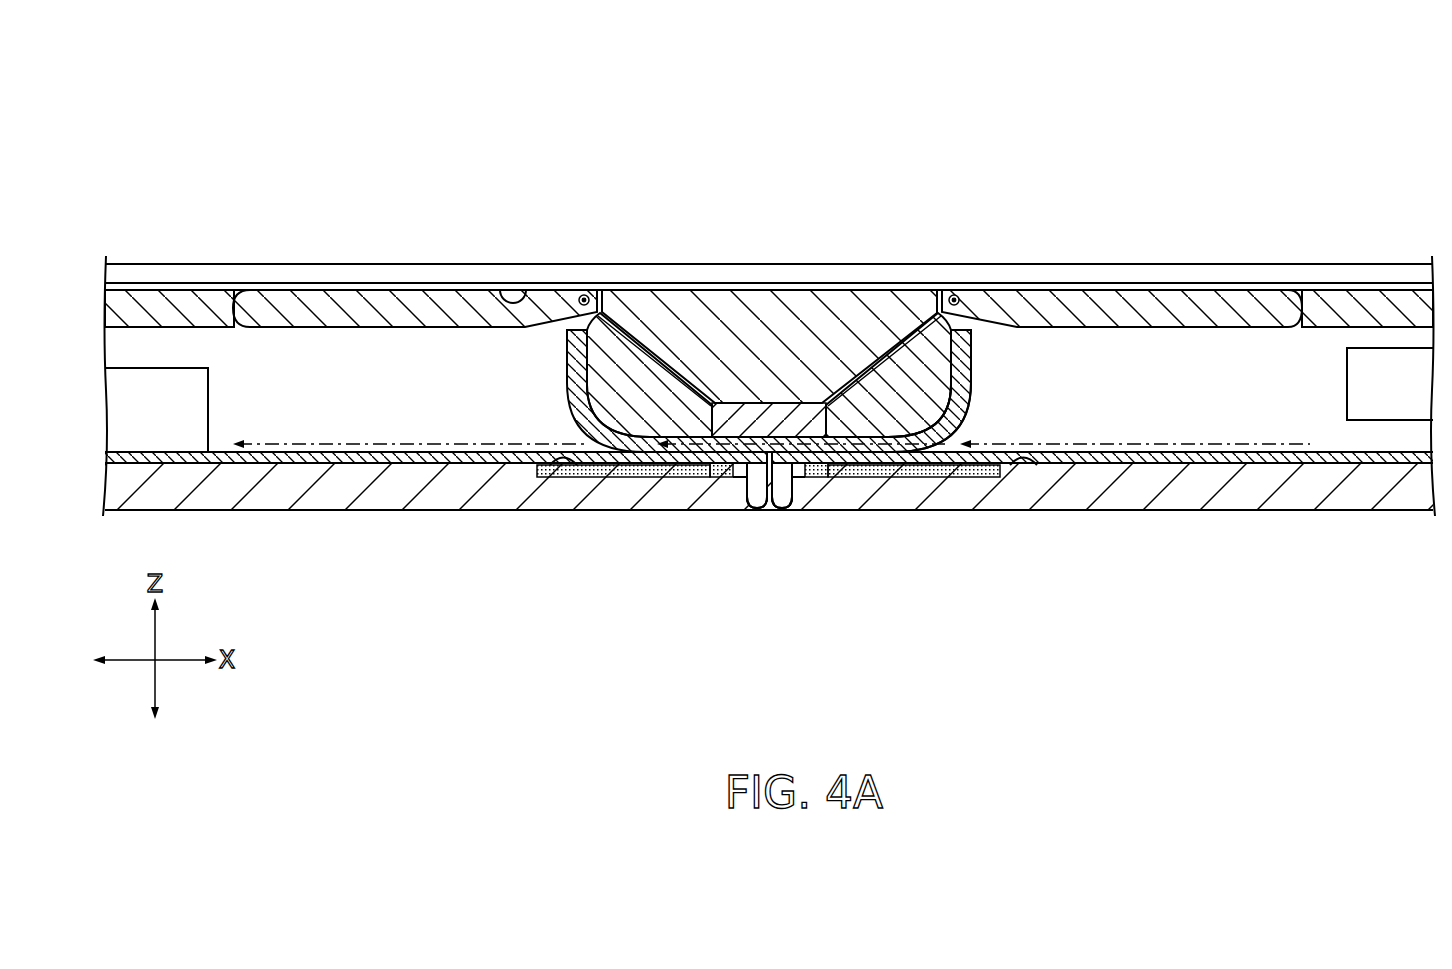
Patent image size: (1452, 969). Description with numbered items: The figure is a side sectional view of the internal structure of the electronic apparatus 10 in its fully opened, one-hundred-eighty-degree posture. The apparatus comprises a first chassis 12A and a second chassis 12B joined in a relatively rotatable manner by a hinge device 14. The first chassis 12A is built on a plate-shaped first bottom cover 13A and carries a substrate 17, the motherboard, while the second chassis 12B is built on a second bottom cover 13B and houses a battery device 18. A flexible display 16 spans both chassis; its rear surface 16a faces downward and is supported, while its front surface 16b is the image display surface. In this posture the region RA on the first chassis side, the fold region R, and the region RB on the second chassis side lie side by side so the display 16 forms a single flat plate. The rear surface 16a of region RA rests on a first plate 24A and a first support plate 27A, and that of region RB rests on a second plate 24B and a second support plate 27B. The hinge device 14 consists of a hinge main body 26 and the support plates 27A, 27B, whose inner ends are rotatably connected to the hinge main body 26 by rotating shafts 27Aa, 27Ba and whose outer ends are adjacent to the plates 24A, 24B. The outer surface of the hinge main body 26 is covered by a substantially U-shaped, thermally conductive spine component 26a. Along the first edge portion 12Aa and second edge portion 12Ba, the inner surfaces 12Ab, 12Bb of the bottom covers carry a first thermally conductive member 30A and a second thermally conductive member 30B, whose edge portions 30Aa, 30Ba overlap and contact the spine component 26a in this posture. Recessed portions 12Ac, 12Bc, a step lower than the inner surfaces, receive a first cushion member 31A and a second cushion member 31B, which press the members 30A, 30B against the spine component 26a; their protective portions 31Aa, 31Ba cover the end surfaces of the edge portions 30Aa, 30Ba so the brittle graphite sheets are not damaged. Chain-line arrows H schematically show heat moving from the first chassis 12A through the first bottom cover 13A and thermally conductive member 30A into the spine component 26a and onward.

The electronic apparatus 10 is at (132, 111).
The first chassis 12A is at (1070, 539).
The first edge portion 12Aa is at (763, 487).
The inner surface of first chassis 12Ab is at (1035, 457).
The recessed portion of first chassis 12Ac is at (998, 474).
The second chassis 12B is at (476, 539).
The second edge portion 12Ba is at (772, 488).
The inner surface of second chassis 12Bb is at (343, 453).
The recessed portion of second chassis 12Bc is at (547, 474).
The first bottom cover 13A is at (1185, 487).
The second bottom cover 13B is at (298, 487).
The hinge device 14 is at (761, 382).
The display 16 is at (769, 227).
The rear surface of display 16a is at (558, 284).
The front surface of display 16b is at (513, 290).
The substrate 17 is at (1393, 385).
The battery device 18 is at (170, 405).
The first plate 24A is at (1385, 307).
The second plate 24B is at (143, 306).
The hinge main body 26 is at (834, 281).
The spine component 26a is at (974, 369).
The first support plate 27A is at (1109, 256).
The rotating shaft 27Aa is at (953, 295).
The second support plate 27B is at (423, 256).
The rotating shaft 27Ba is at (584, 295).
The first thermally conductive member 30A is at (1056, 529).
The edge portion of first thermally conductive member 30Aa is at (851, 388).
The second thermally conductive member 30B is at (596, 529).
The edge portion of second thermally conductive member 30Ba is at (686, 388).
The first cushion member 31A is at (933, 468).
The protective portion of first cushion member 31Aa is at (818, 458).
The second cushion member 31B is at (622, 468).
The protective portion of second cushion member 31Ba is at (722, 458).
The fold region R is at (768, 254).
The region on first chassis side RA is at (1315, 254).
The region on second chassis side RB is at (213, 254).
The arrows indicating heat movement H is at (292, 448).